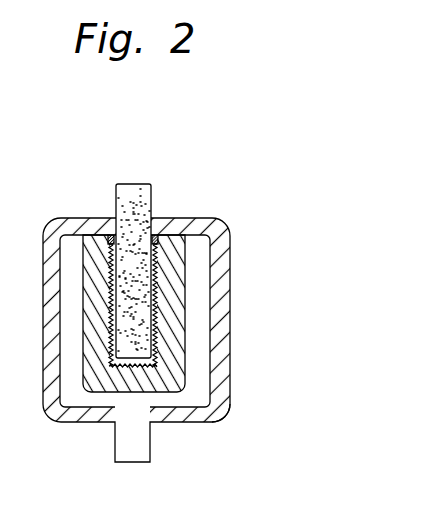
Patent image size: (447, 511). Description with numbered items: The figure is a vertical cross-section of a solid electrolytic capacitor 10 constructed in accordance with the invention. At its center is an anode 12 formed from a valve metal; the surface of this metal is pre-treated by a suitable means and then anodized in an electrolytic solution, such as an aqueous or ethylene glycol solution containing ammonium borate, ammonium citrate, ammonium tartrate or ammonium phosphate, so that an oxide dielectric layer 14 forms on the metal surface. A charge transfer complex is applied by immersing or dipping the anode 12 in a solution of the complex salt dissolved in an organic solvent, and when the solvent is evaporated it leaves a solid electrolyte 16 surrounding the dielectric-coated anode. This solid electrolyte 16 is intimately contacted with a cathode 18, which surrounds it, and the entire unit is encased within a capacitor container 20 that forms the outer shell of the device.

The capacitor 10 is at (236, 222).
The anode 12 is at (143, 195).
The oxide dielectric layer 14 is at (160, 276).
The solid electrolyte 16 is at (175, 328).
The cathode 18 is at (199, 367).
The capacitor container 20 is at (218, 400).